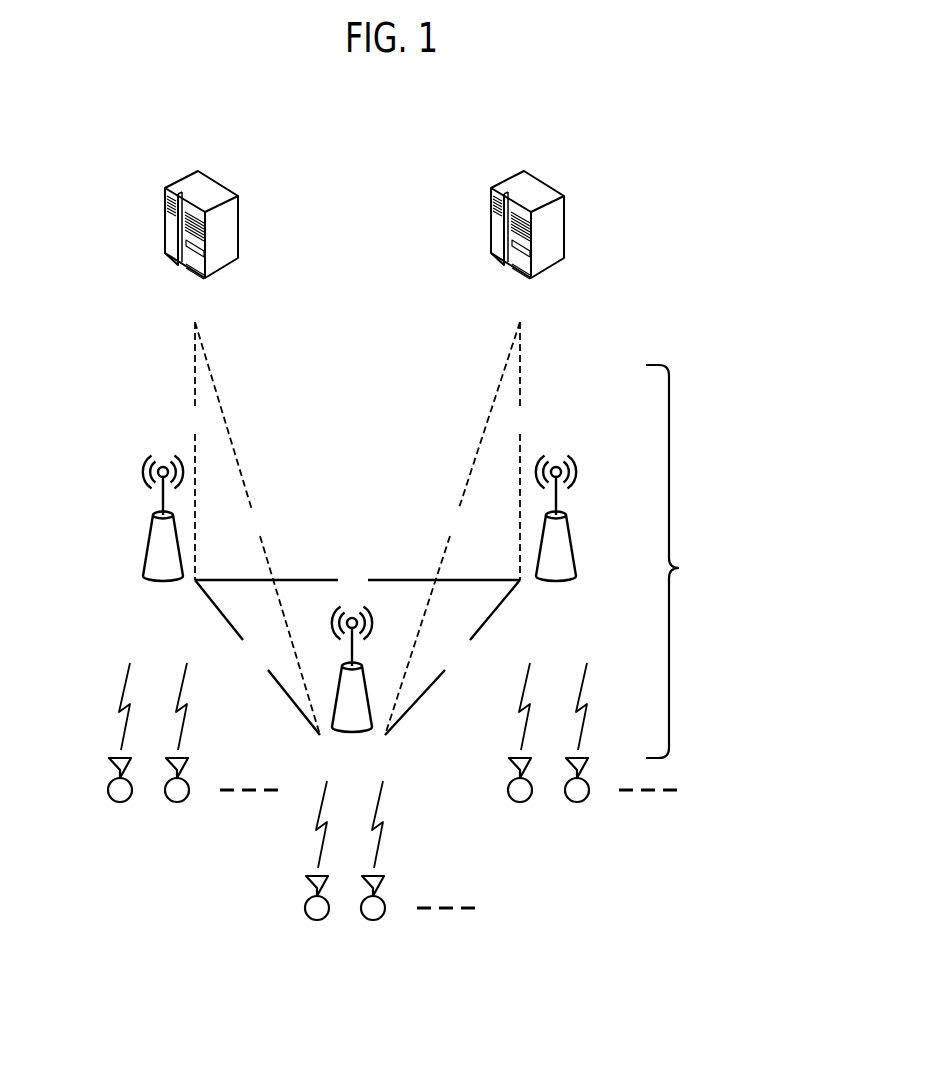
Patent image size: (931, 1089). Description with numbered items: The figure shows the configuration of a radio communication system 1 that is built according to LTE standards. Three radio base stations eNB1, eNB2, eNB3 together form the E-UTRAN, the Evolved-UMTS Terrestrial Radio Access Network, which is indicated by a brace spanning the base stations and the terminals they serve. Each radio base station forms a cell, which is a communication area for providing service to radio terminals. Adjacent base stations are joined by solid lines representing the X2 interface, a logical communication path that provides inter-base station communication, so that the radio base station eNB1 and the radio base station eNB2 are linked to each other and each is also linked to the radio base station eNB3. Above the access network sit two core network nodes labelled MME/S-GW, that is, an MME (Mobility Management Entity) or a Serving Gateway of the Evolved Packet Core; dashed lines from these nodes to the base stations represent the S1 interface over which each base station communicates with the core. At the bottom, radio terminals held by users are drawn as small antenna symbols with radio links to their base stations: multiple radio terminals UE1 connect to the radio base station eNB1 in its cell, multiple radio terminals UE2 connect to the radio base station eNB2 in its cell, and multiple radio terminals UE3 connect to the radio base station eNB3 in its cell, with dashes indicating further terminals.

The radio communication system 1 is at (608, 133).
The MME (Mobility Management Entity) MME is at (361, 244).
The S1 interface S1 is at (359, 528).
The X2 interface X2 is at (357, 651).
The radio base station eNB1 is at (162, 539).
The radio base station eNB2 is at (555, 539).
The radio base station eNB3 is at (351, 690).
The radio terminals UE1 is at (190, 749).
The radio terminals UE2 is at (589, 749).
The radio terminals UE3 is at (387, 869).
The E-UTRAN (Evolved-UMTS Terrestrial Radio Access Network) E-UTRAN is at (712, 561).